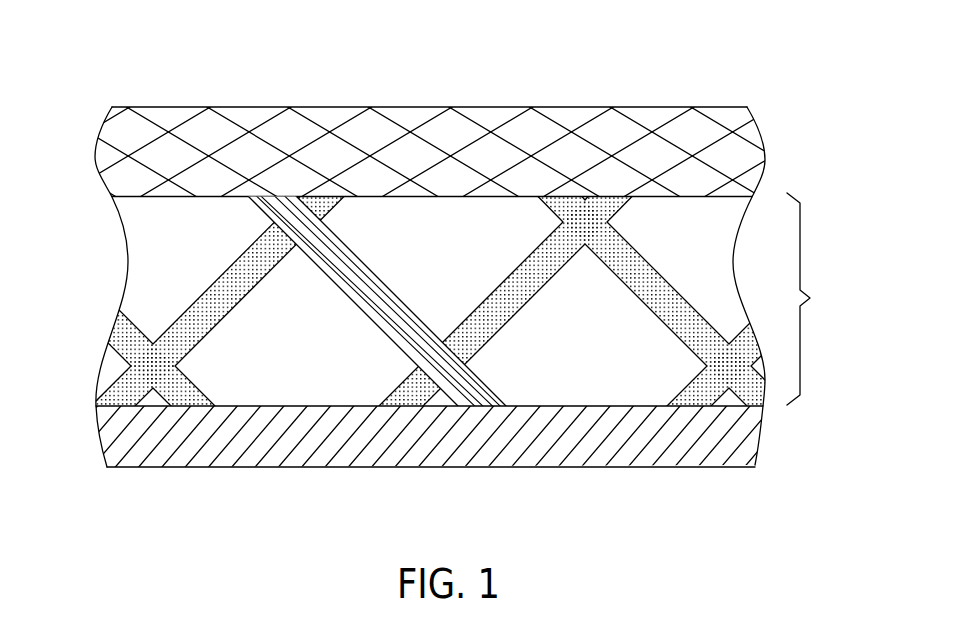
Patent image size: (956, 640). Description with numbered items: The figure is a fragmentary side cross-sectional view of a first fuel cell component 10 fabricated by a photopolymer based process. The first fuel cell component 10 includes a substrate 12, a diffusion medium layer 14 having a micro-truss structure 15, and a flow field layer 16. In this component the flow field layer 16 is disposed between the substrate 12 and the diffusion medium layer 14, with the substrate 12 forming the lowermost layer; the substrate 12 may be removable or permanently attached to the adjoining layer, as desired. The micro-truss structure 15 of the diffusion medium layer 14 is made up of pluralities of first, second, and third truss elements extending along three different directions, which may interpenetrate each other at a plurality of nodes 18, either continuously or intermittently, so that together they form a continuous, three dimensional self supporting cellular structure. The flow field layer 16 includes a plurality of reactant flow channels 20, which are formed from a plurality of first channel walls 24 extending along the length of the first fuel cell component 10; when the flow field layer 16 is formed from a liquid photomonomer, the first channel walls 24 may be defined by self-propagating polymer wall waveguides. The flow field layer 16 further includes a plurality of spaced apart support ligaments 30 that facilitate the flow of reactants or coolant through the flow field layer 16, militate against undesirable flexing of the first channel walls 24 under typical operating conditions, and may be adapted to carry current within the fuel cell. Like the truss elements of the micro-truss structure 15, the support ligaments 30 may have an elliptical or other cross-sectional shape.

The first fuel cell component 10 is at (692, 66).
The substrate 12 is at (764, 441).
The diffusion medium layer 14 is at (473, 125).
The micro-truss structure 15 is at (492, 138).
The flow field layer 16 is at (463, 300).
The nodes 18 is at (368, 142).
The reactant flow channels 20 is at (365, 223).
The first channel walls 24 is at (358, 258).
The support ligaments 30 is at (249, 294).